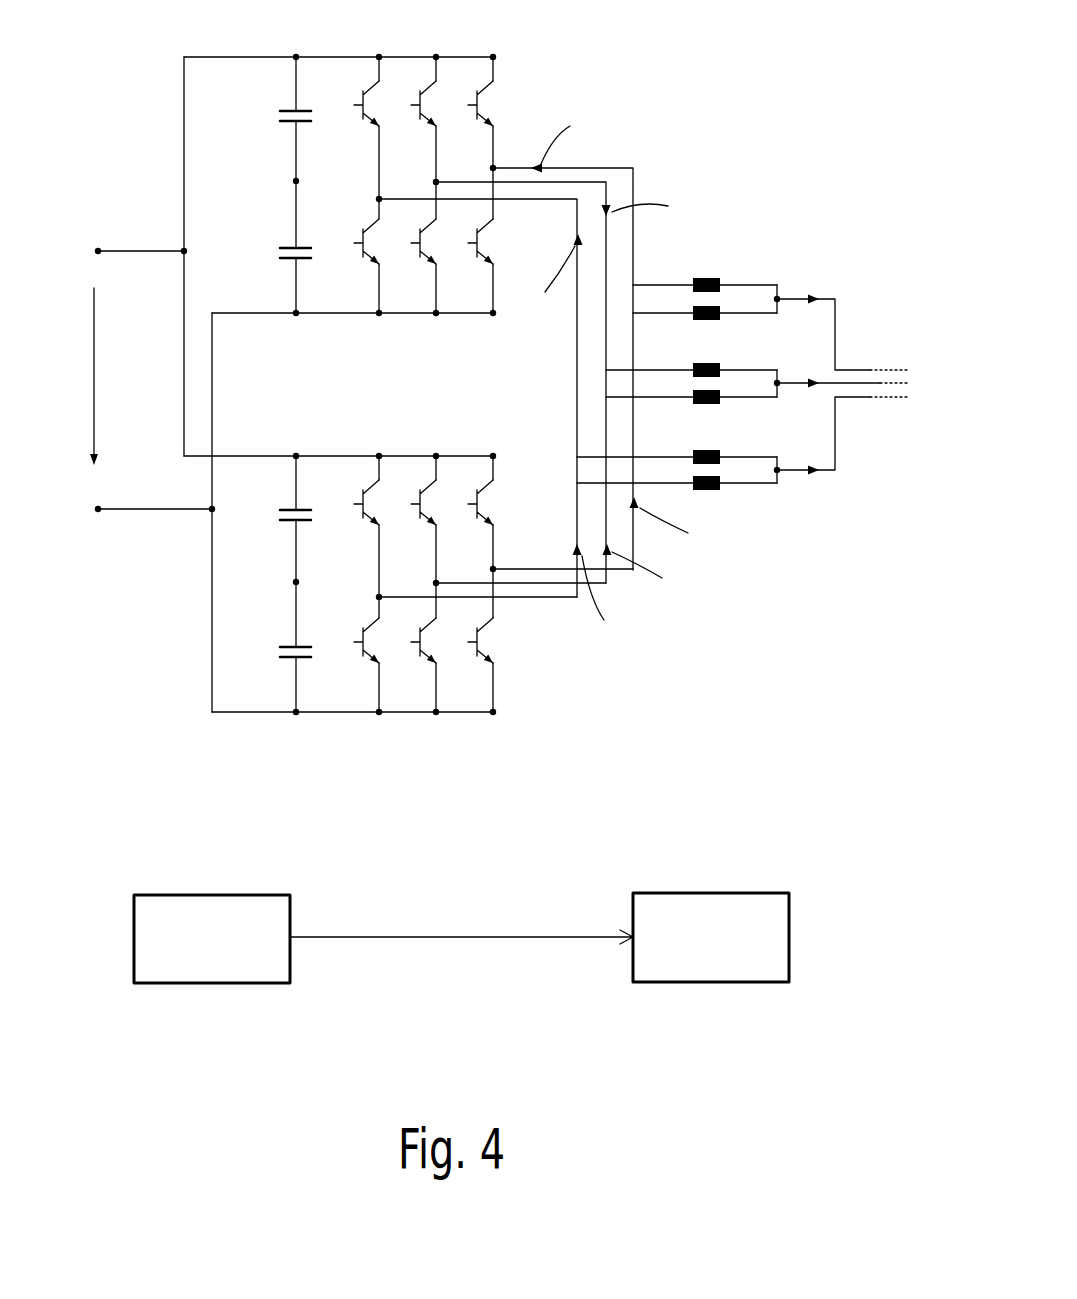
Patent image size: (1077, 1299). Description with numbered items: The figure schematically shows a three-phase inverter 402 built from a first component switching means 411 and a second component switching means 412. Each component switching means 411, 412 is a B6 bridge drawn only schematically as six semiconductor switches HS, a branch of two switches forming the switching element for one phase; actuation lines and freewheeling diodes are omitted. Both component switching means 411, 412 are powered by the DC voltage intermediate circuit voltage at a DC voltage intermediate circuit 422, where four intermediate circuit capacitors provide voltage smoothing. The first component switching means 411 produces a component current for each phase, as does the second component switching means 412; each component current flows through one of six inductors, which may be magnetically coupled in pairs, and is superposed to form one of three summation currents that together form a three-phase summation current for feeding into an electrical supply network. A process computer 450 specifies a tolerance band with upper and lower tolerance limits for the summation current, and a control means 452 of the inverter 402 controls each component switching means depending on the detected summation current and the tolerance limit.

The inverter 402 is at (603, 696).
The first component switching means 411 is at (536, 88).
The second component switching means 412 is at (470, 737).
The DC voltage intermediate circuit 422 is at (58, 275).
The process computer 450 is at (220, 985).
The control means 452 is at (717, 984).